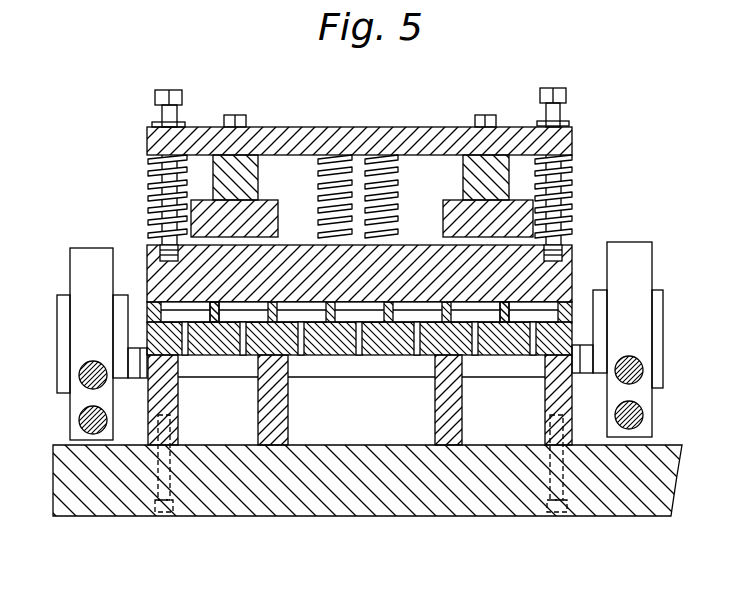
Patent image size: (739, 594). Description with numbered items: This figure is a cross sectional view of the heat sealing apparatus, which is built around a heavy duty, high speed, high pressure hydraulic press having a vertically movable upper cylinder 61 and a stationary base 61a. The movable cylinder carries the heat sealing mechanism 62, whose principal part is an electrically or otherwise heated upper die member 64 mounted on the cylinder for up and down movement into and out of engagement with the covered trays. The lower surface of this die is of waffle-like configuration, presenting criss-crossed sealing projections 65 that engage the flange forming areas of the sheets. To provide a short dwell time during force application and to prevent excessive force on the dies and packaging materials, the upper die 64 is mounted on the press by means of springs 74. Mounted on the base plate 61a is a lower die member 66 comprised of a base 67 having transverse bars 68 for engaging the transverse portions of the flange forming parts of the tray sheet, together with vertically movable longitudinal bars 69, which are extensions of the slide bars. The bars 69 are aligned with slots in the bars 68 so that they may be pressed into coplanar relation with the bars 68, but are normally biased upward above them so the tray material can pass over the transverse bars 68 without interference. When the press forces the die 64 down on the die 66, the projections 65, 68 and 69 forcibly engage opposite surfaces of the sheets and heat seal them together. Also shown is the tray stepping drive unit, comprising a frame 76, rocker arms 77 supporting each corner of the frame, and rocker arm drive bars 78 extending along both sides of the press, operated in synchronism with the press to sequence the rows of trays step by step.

The upper cylinder 61 is at (421, 133).
The stationary base 61a is at (637, 513).
The heat sealing mechanism 62 is at (652, 226).
The upper die member 64 is at (573, 247).
The sealing projections 65 is at (430, 302).
The lower die member 66 is at (397, 364).
The base 67 is at (338, 342).
The transverse bars 68 is at (231, 318).
The longitudinal bars 69 is at (212, 322).
The springs 74 is at (150, 174).
The frame 76 is at (310, 370).
The rocker arms 77 is at (122, 302).
The rocker arm drive bars 78 is at (88, 375).